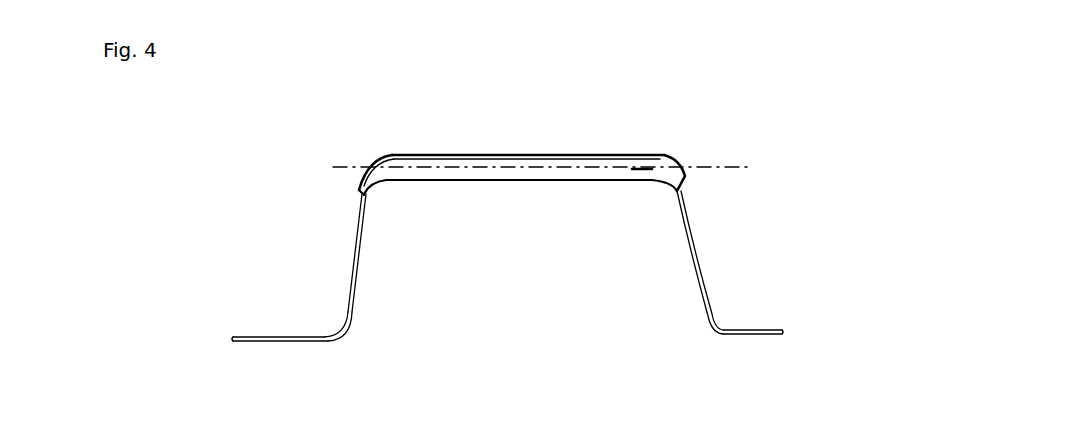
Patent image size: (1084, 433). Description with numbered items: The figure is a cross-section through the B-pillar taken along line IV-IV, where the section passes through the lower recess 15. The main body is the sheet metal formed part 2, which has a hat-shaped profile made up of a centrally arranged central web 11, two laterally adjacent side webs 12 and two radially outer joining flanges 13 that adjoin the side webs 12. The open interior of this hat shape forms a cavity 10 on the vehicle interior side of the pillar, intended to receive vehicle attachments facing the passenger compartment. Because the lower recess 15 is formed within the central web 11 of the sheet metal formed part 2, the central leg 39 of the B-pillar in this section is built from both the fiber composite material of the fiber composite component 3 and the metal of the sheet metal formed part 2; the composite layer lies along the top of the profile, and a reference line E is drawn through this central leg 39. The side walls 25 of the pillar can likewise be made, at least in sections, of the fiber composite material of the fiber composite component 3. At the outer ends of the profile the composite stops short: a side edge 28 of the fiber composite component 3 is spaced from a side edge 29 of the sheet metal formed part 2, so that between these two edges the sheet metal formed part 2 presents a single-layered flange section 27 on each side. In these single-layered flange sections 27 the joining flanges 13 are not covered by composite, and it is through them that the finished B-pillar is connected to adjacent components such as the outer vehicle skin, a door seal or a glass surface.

The cavity 10 is at (519, 219).
The sheet metal formed part 2 is at (353, 318).
The fiber composite component 3 is at (450, 163).
The lower recess 15 is at (408, 165).
The central web 11 is at (645, 166).
The central leg 39 is at (520, 155).
The side edge of the fiber composite component 28 is at (357, 193).
The side walls 25 is at (356, 272).
The side webs 12 is at (693, 255).
The single-layered flange section 27 is at (278, 336).
The joining flanges 13 is at (277, 342).
The side edge of the sheet metal formed part 29 is at (228, 337).
The plane E is at (745, 160).